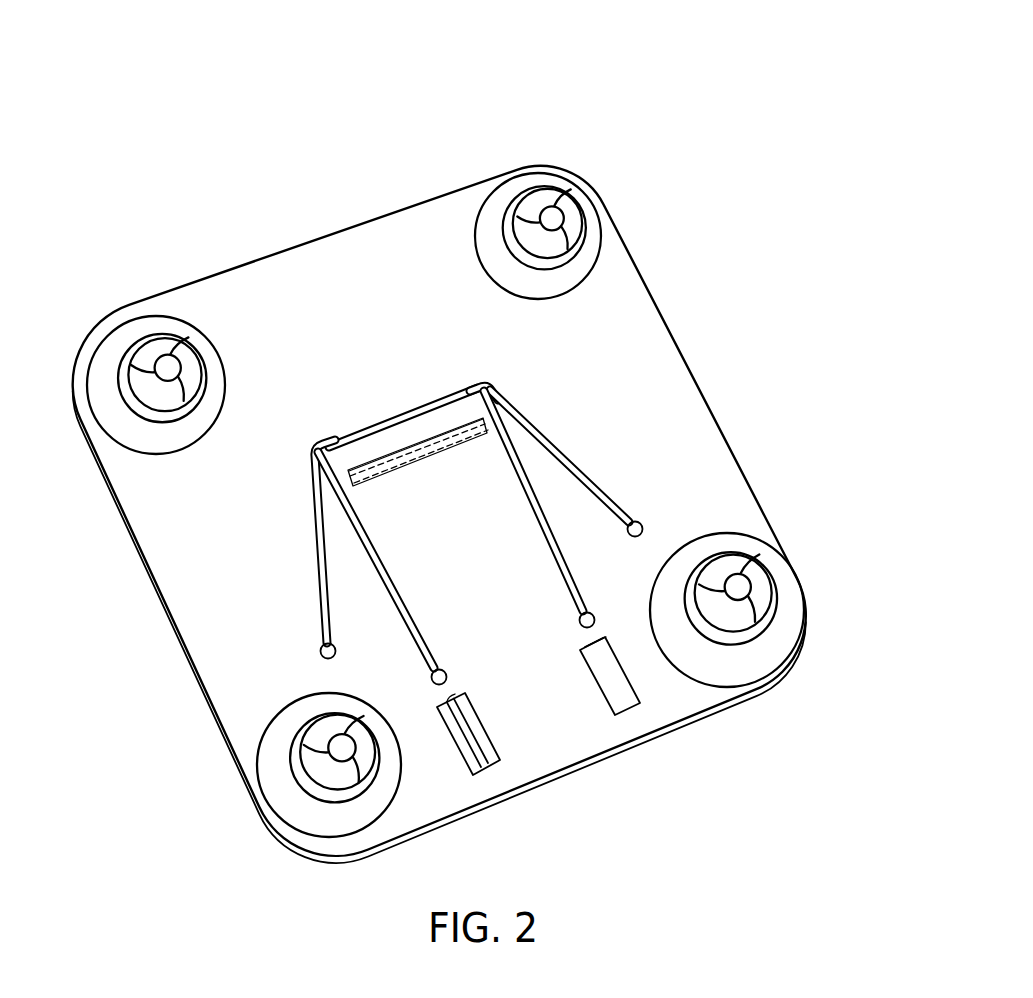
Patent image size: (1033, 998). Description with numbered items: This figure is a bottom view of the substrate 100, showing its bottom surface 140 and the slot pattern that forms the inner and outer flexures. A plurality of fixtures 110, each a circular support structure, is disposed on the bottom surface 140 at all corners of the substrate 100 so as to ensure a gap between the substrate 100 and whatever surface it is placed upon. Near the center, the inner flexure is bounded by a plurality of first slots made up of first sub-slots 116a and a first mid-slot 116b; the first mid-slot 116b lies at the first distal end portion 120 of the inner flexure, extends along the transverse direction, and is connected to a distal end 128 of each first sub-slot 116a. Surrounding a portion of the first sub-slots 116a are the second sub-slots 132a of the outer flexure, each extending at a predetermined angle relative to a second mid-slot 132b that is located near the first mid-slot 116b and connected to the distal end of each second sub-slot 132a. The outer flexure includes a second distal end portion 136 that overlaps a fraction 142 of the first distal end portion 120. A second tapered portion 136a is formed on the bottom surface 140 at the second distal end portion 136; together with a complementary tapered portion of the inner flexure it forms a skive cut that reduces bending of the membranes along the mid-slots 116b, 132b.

The substrate 100 is at (683, 67).
The fixture 110 is at (535, 195).
The first sub-slot 116a is at (546, 548).
The first mid-slot 116b is at (426, 430).
The first distal end portion 120 is at (362, 490).
The distal end 128 is at (312, 486).
The second sub-slot 132a is at (322, 590).
The second mid-slot 132b is at (432, 405).
The second distal end portion 136 is at (444, 505).
The second tapered portion 136a is at (474, 400).
The bottom surface 140 is at (323, 270).
The fraction 142 is at (398, 462).